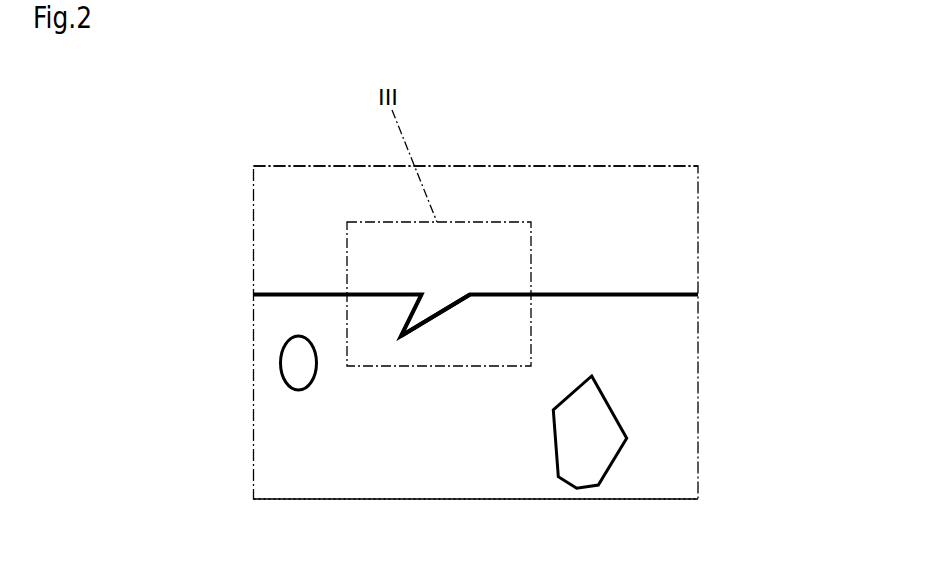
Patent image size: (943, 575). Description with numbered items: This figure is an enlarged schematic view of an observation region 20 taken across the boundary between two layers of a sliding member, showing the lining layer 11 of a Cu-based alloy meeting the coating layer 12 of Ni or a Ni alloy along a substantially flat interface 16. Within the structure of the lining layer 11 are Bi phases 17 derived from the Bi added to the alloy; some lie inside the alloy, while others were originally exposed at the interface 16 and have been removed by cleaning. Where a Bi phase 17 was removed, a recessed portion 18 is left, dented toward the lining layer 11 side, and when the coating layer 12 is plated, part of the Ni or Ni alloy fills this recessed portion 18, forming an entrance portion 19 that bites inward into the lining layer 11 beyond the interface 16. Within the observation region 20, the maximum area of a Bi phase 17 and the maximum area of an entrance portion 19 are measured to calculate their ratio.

The lining layer 11 is at (275, 444).
The coating layer 12 is at (270, 216).
The interface 16 is at (627, 292).
The Bi phase 17 is at (280, 360).
The recessed portion 18 is at (440, 310).
The entrance portion 19 is at (405, 307).
The observation region 20 is at (599, 166).